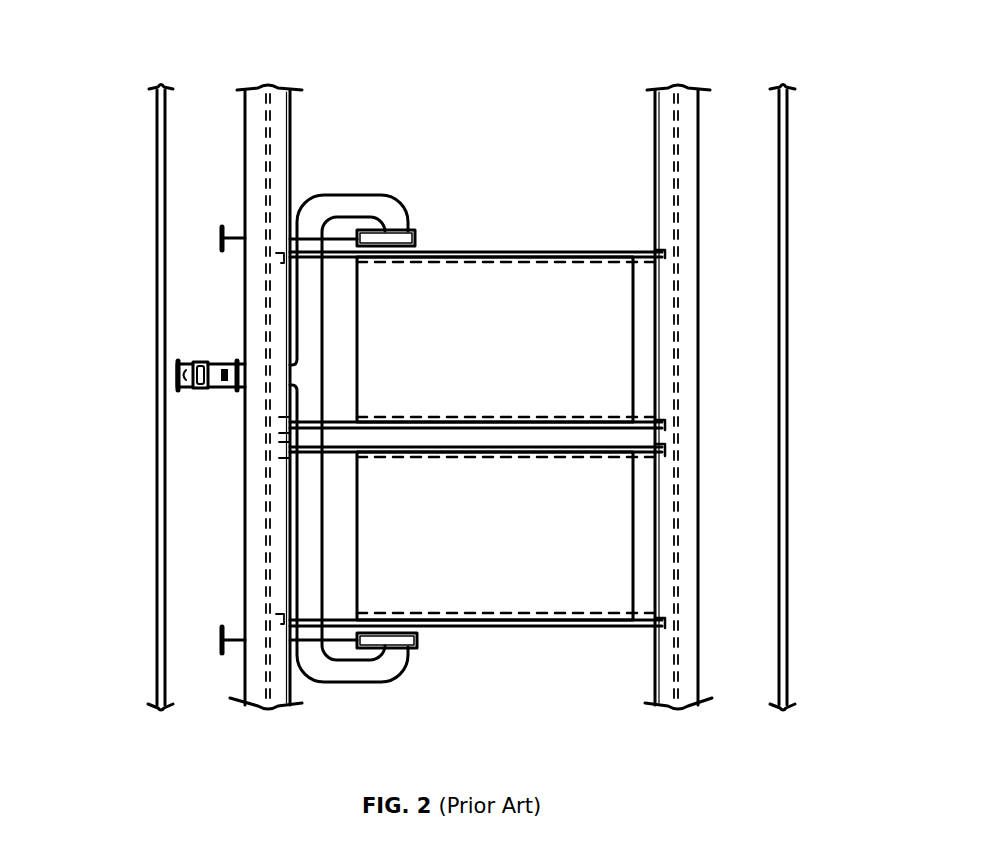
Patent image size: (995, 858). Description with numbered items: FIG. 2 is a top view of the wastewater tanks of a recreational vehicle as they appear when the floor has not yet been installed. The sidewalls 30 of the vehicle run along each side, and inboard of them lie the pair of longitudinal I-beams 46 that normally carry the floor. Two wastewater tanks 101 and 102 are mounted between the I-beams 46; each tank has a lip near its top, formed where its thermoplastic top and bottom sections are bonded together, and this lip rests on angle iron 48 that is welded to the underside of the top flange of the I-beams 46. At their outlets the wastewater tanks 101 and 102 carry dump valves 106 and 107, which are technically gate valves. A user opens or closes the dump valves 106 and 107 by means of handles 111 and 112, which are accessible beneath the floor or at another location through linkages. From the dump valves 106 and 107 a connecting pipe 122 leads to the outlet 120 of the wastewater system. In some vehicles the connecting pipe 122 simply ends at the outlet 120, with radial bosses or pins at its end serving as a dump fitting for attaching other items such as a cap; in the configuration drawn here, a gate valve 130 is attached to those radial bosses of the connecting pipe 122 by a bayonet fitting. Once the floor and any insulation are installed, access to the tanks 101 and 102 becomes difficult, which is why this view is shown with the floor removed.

The sidewall 30 is at (157, 127).
The I-beam 46 is at (243, 110).
The angle iron 48 is at (640, 250).
The wastewater tank 101 is at (600, 578).
The wastewater tank 102 is at (590, 300).
The dump valve 106 is at (412, 642).
The dump valve 107 is at (412, 238).
The handle 111 is at (220, 641).
The handle 112 is at (220, 230).
The outlet 120 is at (177, 375).
The connecting pipe 122 is at (368, 208).
The gate valve 130 is at (195, 392).